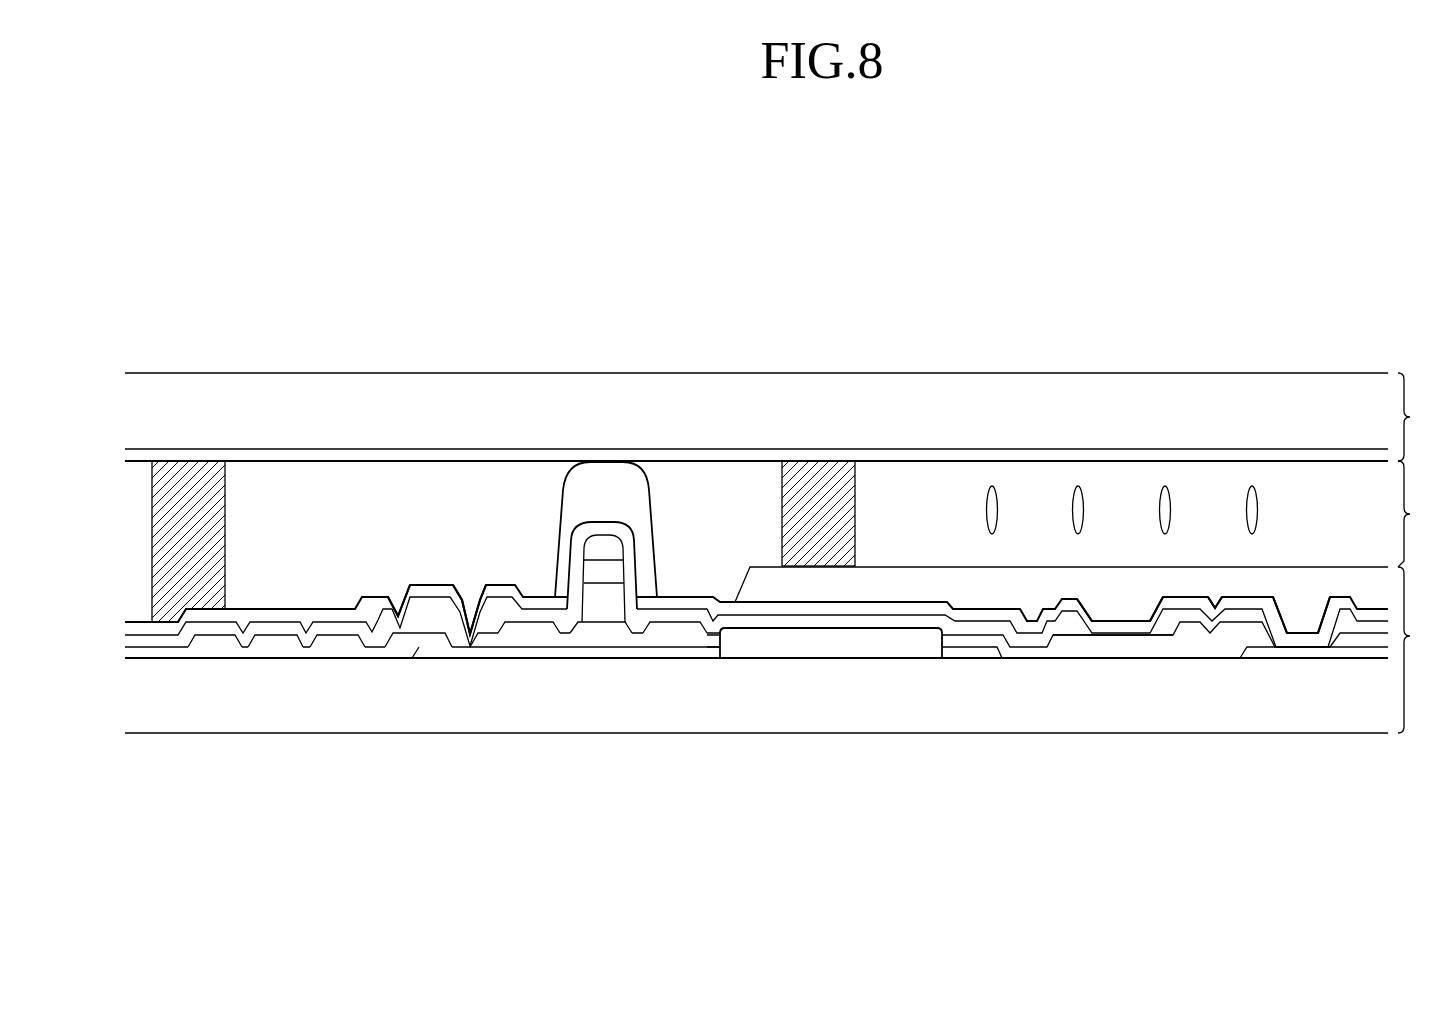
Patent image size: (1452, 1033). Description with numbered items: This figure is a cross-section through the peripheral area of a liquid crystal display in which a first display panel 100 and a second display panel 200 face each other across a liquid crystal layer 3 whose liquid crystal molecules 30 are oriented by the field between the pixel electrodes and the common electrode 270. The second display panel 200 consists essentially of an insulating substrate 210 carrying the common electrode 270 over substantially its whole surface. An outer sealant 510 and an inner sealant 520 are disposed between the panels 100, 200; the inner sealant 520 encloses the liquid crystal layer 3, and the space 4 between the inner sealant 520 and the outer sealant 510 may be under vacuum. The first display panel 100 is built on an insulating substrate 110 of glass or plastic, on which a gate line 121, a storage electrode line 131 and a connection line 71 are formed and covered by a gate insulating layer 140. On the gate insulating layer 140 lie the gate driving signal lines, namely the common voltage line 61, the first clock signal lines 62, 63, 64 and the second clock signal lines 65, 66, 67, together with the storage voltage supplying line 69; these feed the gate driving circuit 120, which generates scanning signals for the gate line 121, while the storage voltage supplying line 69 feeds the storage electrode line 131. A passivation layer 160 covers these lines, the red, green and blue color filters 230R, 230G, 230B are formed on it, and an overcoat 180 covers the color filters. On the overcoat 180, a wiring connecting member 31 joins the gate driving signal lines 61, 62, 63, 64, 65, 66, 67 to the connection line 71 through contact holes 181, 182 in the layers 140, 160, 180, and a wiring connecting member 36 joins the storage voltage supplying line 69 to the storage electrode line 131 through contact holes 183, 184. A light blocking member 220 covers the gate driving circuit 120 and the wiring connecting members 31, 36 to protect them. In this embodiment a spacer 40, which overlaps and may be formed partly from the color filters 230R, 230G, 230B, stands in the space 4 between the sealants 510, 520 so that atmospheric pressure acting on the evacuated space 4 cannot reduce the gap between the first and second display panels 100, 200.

The second display panel 200 is at (788, 417).
The insulating substrate 210 is at (772, 395).
The common electrode 270 is at (953, 453).
The liquid crystal layer 3 is at (1419, 514).
The liquid crystal molecules 30 is at (997, 507).
The outer sealant 510 is at (190, 487).
The inner sealant 520 is at (820, 480).
The light blocking member 220 is at (735, 593).
The spacer 40 is at (647, 466).
The green color filter 230G is at (601, 545).
The red color filter 230R is at (595, 595).
The blue color filter 230B is at (610, 575).
The overcoat 180 is at (803, 610).
The contact hole 181 is at (398, 598).
The contact hole 182 is at (472, 600).
The contact hole 183 is at (1125, 608).
The contact hole 184 is at (1303, 612).
The wiring connecting member 31 is at (437, 585).
The wiring connecting member 36 is at (1237, 600).
The passivation layer 160 is at (760, 622).
The common voltage line 61 is at (212, 641).
The first clock signal line 62 is at (268, 641).
The first clock signal line 63 is at (343, 641).
The first clock signal line 64 is at (395, 640).
The second clock signal line 65 is at (522, 627).
The second clock signal line 66 is at (600, 635).
The second clock signal line 67 is at (688, 628).
The space 4 is at (308, 542).
The gate insulating layer 140 is at (1082, 652).
The connection line 71 is at (463, 652).
The gate line 121 is at (978, 652).
The storage voltage supplying line 69 is at (1133, 642).
The storage electrode line 131 is at (1297, 652).
The gate driving circuit 120 is at (905, 645).
The insulating substrate 110 is at (863, 713).
The first display panel 100 is at (1425, 650).